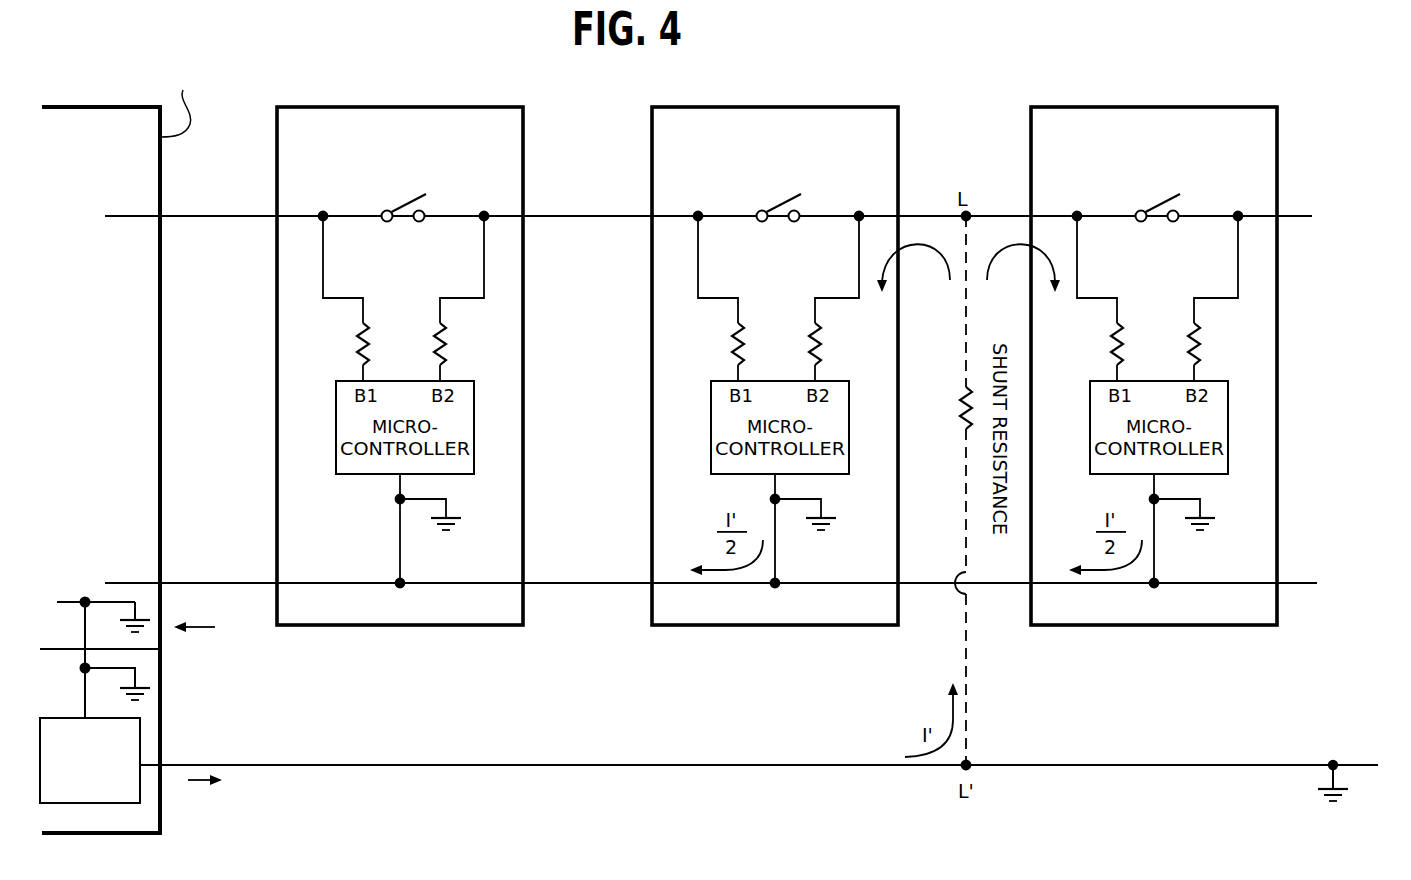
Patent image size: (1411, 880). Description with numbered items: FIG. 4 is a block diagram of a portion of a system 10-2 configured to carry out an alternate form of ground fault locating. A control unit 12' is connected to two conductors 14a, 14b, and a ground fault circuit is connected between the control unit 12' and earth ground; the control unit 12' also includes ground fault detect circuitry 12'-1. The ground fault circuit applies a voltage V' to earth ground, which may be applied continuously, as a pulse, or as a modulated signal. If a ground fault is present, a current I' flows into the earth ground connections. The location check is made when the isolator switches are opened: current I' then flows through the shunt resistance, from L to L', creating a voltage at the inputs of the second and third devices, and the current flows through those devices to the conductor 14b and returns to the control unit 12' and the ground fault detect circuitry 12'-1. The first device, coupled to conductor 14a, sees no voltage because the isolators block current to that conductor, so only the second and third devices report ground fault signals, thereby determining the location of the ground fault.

The control unit 12' is at (131, 437).
The conductor 14a is at (182, 219).
The conductor 14b is at (203, 582).
The ground fault detect circuitry 12'-1 is at (143, 720).
The system 10-2 is at (710, 787).